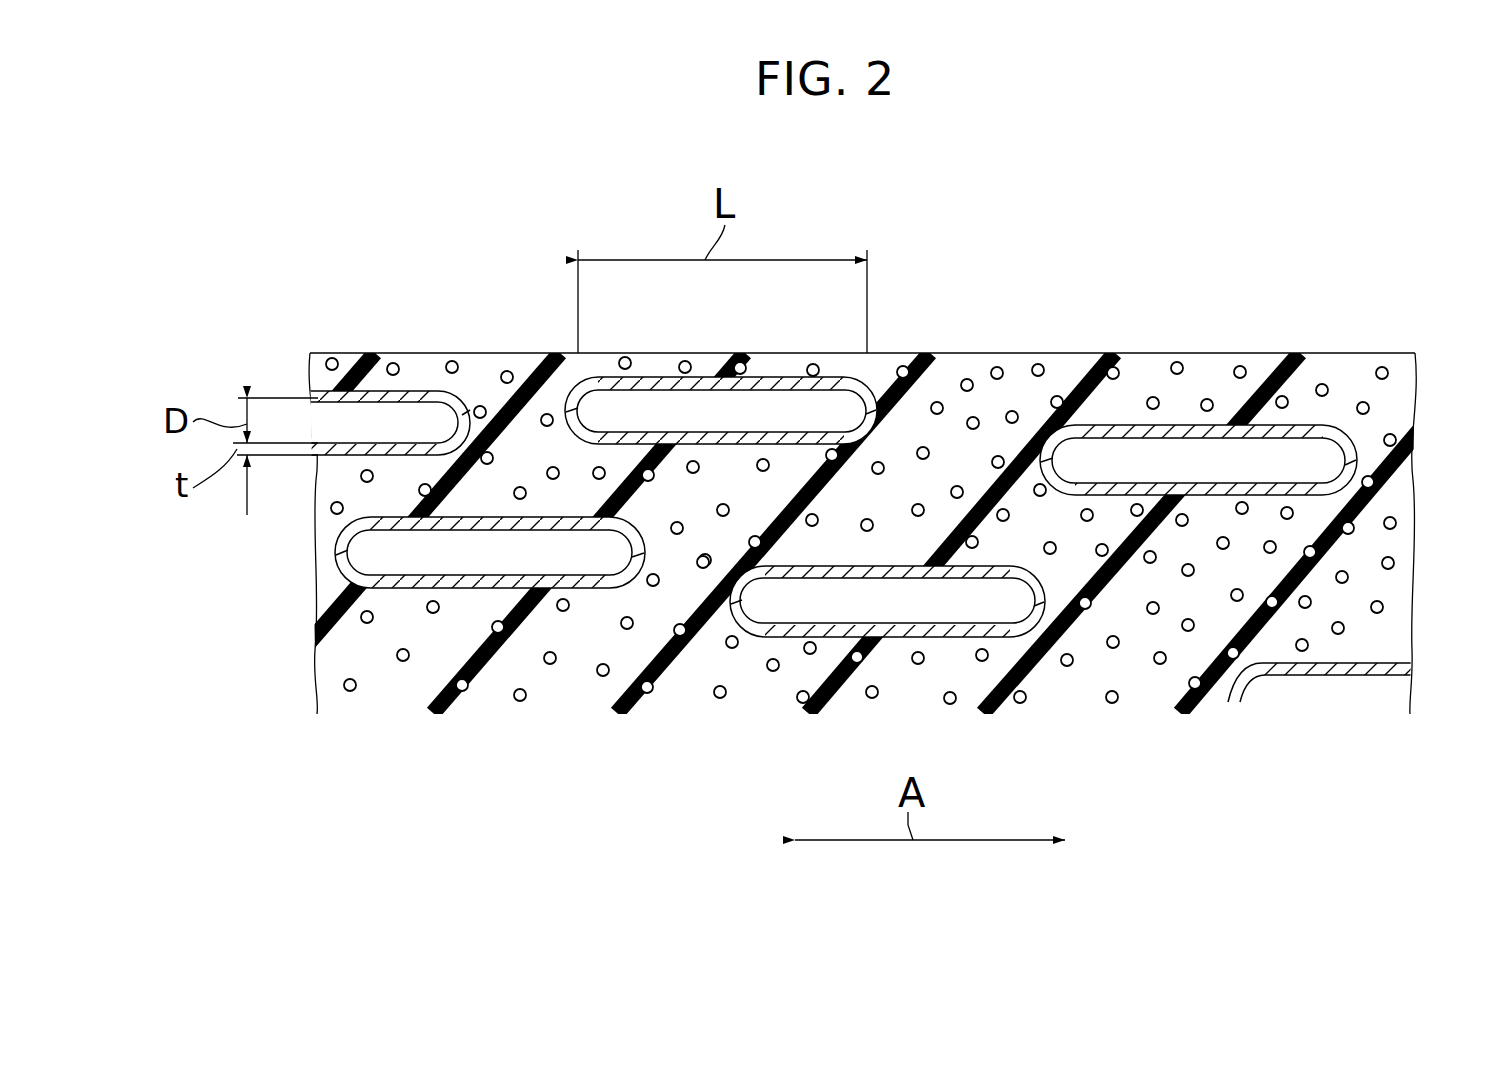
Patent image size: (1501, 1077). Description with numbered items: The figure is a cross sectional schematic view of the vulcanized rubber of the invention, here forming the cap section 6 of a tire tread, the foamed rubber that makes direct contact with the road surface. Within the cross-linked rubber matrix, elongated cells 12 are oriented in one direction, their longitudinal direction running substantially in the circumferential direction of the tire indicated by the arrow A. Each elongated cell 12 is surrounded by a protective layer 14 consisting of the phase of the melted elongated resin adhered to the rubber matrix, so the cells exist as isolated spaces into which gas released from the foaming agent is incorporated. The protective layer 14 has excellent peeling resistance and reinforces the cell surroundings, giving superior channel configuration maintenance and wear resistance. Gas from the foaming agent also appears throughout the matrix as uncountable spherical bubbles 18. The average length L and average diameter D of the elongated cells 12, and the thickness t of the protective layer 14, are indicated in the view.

The cap section 6 is at (1415, 563).
The elongated cells 12 is at (427, 410).
The protective layer 14 is at (333, 390).
The spherical bubbles 18 is at (1207, 405).